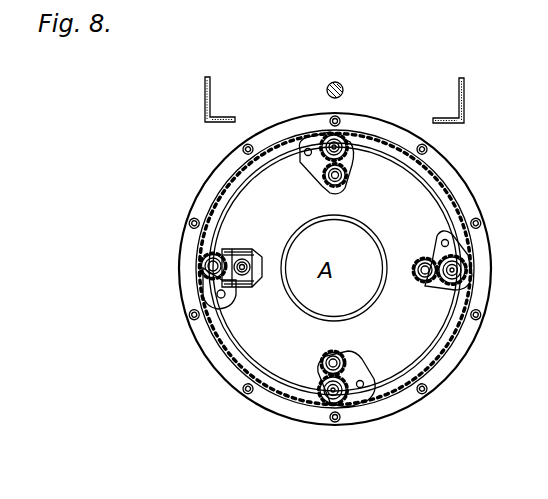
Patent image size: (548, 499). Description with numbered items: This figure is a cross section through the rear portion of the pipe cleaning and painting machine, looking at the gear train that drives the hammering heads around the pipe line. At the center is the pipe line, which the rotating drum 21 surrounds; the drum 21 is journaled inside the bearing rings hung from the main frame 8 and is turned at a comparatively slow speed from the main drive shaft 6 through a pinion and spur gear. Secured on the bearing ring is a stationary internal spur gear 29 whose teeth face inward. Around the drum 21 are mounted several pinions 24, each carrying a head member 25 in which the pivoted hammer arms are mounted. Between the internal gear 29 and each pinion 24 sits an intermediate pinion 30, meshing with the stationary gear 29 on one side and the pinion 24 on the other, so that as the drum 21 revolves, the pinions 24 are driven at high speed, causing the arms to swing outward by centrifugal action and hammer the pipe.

The main drive shaft 6 is at (341, 83).
The main frame 8 is at (467, 107).
The drum 21 is at (440, 211).
The pinion 24 is at (333, 366).
The head member 25 is at (224, 269).
The stationary internal spur gear 29 is at (425, 165).
The intermediate pinion 30 is at (337, 148).